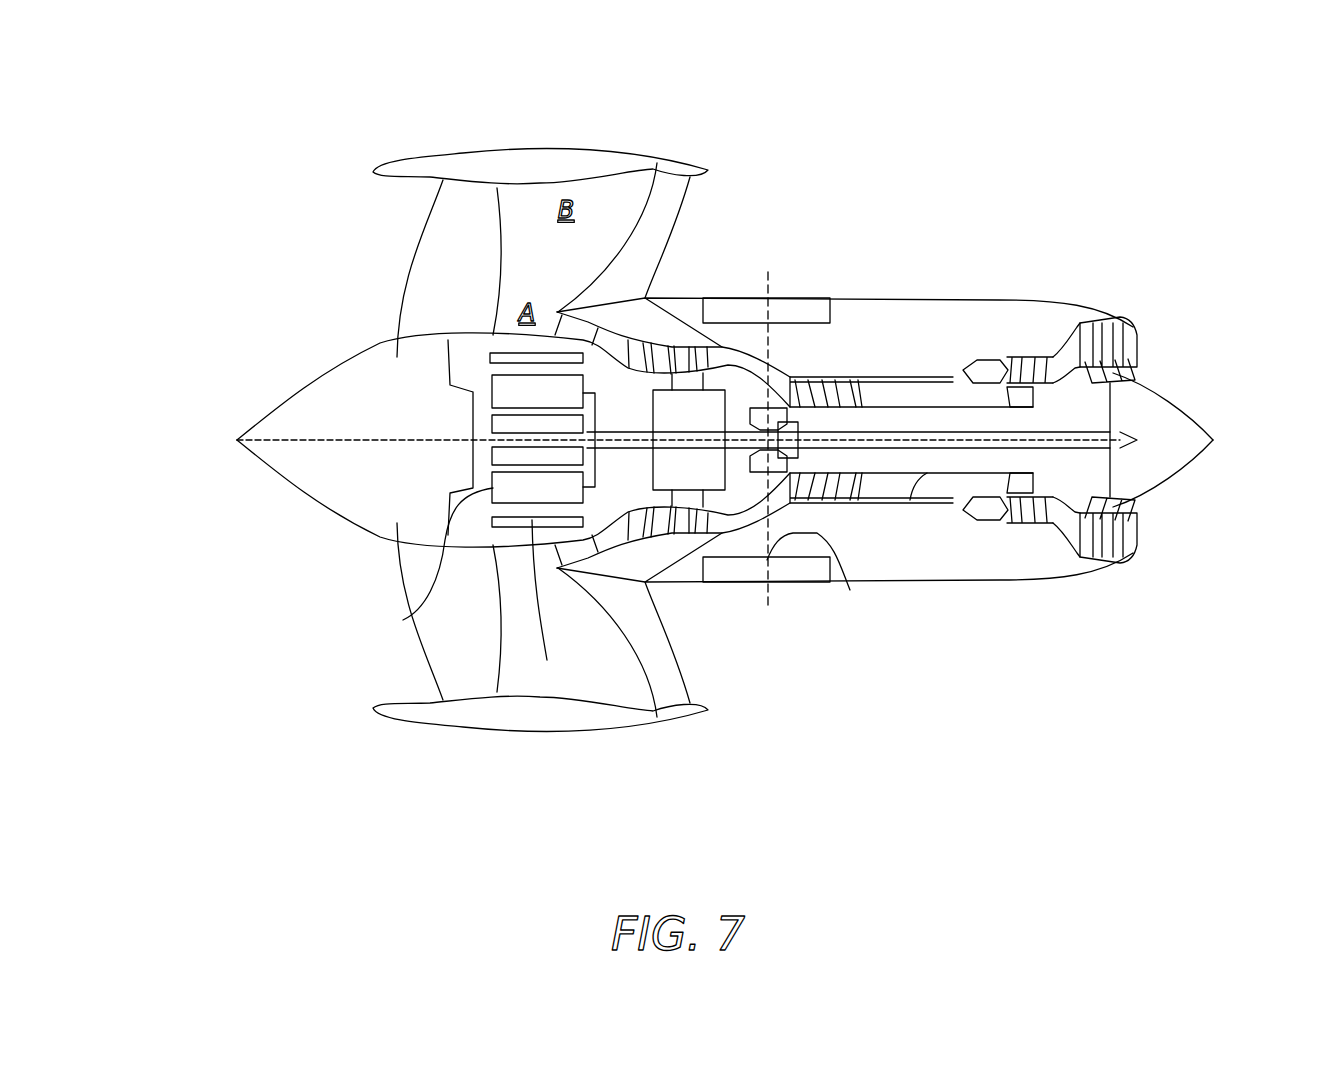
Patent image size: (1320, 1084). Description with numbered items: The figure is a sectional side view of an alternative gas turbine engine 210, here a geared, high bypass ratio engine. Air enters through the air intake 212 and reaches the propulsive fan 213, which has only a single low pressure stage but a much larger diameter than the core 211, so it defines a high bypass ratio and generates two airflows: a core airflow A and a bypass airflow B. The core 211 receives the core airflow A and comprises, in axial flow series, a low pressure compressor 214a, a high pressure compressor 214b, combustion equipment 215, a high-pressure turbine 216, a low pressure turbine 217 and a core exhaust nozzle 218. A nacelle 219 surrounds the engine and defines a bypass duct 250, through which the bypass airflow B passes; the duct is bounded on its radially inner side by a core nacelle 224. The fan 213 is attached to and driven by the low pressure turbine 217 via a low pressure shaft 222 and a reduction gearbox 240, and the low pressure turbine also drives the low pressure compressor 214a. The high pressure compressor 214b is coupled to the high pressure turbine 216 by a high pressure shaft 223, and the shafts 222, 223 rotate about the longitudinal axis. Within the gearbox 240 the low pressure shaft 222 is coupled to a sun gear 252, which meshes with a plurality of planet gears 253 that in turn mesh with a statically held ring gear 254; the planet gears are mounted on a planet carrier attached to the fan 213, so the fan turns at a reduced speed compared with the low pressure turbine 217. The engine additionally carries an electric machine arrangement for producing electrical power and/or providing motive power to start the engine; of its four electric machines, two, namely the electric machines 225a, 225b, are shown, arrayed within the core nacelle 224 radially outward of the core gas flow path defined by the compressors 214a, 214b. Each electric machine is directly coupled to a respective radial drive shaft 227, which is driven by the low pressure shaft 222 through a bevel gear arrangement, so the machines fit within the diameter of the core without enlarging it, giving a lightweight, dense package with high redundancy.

The gas turbine engine 210 is at (897, 228).
The core 211 is at (885, 365).
The air intake 212 is at (383, 318).
The propulsive fan 213 is at (413, 248).
The low pressure compressor 214a is at (660, 340).
The high pressure compressor 214b is at (838, 365).
The combustion equipment 215 is at (982, 535).
The high-pressure turbine 216 is at (1025, 348).
The low pressure turbine 217 is at (1113, 300).
The core exhaust nozzle 218 is at (1152, 530).
The nacelle 219 is at (512, 148).
The low pressure shaft 222 is at (747, 456).
The high pressure shaft 223 is at (910, 500).
The core nacelle 224 is at (840, 583).
The electric machine 225a is at (783, 297).
The electric machine 225b is at (700, 582).
The radial drive shaft 227 is at (850, 590).
The reduction gearbox 240 is at (463, 425).
The bypass duct 250 is at (613, 440).
The sun gear 252 is at (490, 453).
The planet gears 253 is at (403, 620).
The ring gear 254 is at (547, 660).